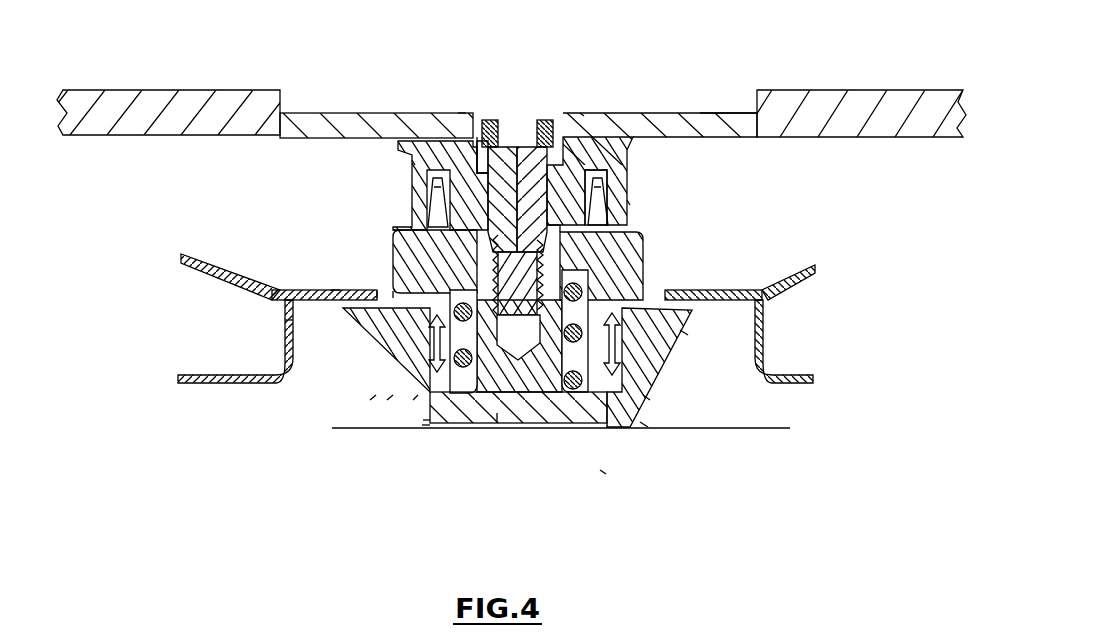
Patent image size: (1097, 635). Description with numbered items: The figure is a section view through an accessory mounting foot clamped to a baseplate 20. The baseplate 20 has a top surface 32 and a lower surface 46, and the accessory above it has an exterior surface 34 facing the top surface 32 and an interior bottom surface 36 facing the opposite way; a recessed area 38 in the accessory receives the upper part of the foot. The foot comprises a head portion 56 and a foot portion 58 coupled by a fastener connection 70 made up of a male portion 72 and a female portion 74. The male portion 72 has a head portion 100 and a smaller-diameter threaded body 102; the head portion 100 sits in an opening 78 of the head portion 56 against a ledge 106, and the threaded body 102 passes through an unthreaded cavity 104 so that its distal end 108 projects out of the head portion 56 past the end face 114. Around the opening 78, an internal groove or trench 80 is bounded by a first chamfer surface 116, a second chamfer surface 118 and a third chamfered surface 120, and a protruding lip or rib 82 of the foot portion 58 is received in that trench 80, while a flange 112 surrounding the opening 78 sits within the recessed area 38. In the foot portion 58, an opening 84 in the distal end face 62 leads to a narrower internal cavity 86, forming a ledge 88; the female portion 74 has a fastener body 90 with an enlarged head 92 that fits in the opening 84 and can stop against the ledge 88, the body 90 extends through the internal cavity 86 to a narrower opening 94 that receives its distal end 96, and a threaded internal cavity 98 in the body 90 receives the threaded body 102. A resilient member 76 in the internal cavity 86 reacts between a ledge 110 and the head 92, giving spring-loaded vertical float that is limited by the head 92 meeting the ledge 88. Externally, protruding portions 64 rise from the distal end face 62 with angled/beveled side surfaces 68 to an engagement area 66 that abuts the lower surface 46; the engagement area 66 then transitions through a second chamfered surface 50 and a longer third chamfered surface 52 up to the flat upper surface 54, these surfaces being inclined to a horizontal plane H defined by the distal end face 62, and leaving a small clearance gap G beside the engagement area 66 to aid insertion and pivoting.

The baseplate 20 is at (262, 303).
The top surface of the baseplate 32 is at (737, 289).
The exterior surface of the accessory 34 is at (835, 137).
The interior bottom surface of the accessory 36 is at (256, 90).
The recessed area 38 is at (283, 113).
The lower surface of the baseplate 46 is at (313, 308).
The second chamfered or angled surface 50 is at (372, 322).
The third chamfered or angled surface 52 is at (398, 274).
The upper surface of the foot portion 54 is at (412, 208).
The head portion 56 is at (636, 126).
The foot portion 58 is at (423, 420).
The distal end face 62 is at (422, 425).
The protruding portions 64 is at (387, 400).
The engagement area 66 is at (335, 292).
The angled/beveled side surface 68 is at (370, 400).
The fastener connection 70 is at (605, 480).
The male portion 72 is at (481, 125).
The female portion 74 is at (497, 414).
The resilient member 76 is at (652, 362).
The opening in the head portion 78 is at (462, 113).
The internal groove or trench 80 is at (600, 176).
The protruding lip or rib 82 is at (486, 146).
The opening in the distal end face 84 is at (643, 423).
The internal cavity 86 is at (643, 396).
The ledge 88 is at (413, 400).
The fastener body 90 is at (562, 249).
The enlarged head 92 is at (542, 416).
The opening 94 is at (397, 228).
The distal end of the body 96 is at (436, 188).
The threaded internal cavity 98 is at (412, 360).
The head portion of the male portion 100 is at (549, 123).
The threaded body 102 is at (566, 268).
The unthreaded cavity 104 is at (532, 165).
The ledge 106 is at (412, 162).
The distal end of the threaded body 108 is at (547, 396).
The ledge 110 is at (684, 330).
The flange 112 is at (730, 127).
The end face 114 is at (584, 112).
The first chamfer or open-angle surface 116 is at (628, 204).
The second chamfer surface 118 is at (614, 184).
The third chamfered surface 120 is at (618, 177).
The clearance gap G is at (366, 272).
The horizontal plane H is at (332, 428).